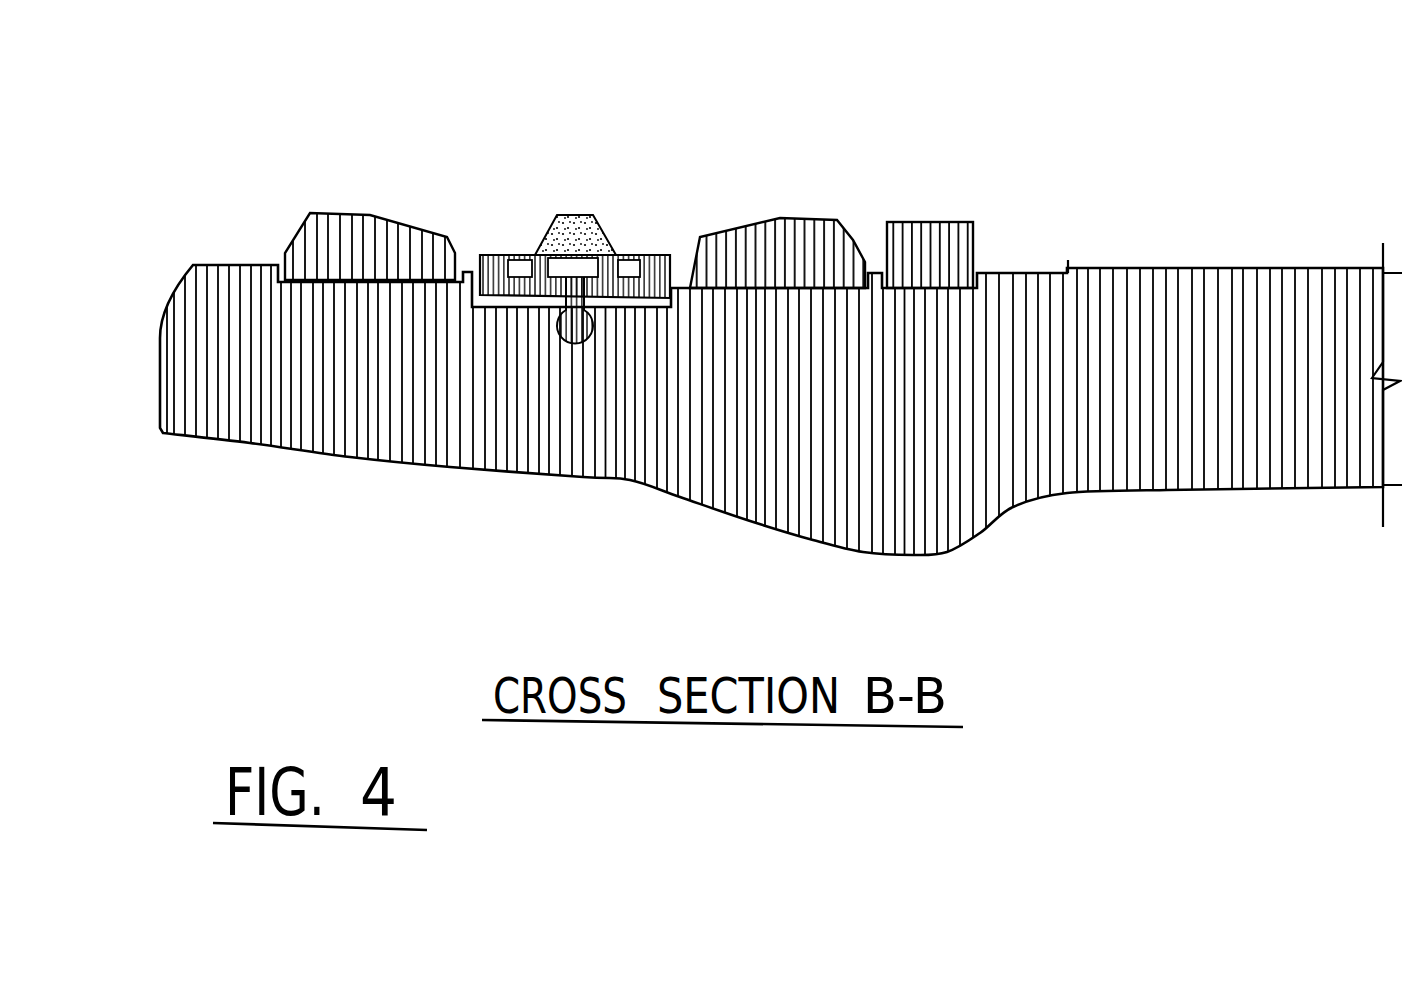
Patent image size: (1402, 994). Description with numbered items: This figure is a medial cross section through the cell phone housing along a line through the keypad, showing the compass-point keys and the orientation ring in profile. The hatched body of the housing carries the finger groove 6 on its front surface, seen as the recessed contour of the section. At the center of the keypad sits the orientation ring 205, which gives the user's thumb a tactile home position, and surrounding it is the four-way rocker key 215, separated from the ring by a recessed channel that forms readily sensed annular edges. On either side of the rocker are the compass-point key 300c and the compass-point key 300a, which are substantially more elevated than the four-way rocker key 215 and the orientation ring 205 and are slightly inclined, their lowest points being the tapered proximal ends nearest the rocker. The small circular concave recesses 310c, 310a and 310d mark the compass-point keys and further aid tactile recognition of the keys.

The finger groove 6 is at (1030, 525).
The compass-point key 300c is at (458, 128).
The circular concave recess 310c is at (330, 213).
The four-way rocker key 215 is at (668, 133).
The orientation ring 205 is at (613, 255).
The circular concave recess 310d is at (575, 233).
The compass-point key 300a is at (867, 137).
The circular concave recess 310a is at (817, 218).